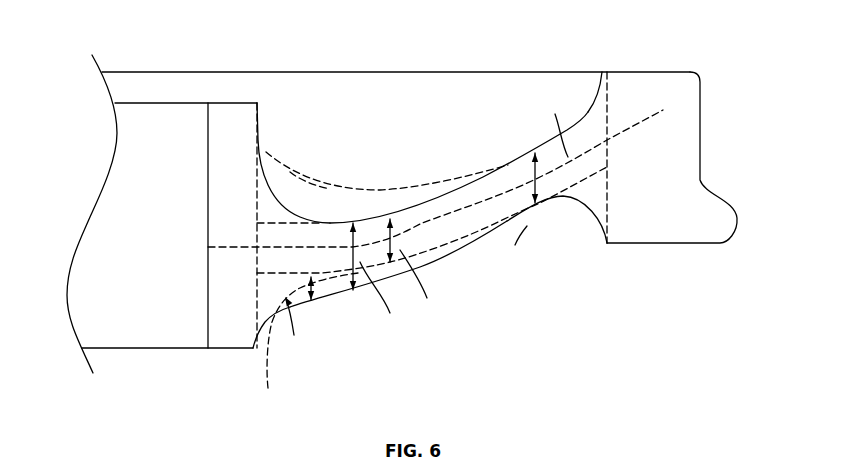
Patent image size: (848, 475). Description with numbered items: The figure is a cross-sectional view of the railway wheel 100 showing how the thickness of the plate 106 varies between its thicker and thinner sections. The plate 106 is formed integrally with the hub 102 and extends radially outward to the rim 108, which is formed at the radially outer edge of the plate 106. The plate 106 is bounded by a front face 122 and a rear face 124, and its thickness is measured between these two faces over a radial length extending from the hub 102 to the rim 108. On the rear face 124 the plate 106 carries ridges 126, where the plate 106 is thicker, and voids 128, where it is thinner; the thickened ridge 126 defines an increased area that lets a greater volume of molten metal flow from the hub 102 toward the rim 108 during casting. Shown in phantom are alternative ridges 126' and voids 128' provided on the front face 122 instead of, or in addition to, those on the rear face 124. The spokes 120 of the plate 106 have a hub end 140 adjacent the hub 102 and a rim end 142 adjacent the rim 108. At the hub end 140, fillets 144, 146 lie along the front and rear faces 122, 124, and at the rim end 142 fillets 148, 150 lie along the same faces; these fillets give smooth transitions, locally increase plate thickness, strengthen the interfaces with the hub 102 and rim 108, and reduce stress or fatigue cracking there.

The railway wheel 100 is at (137, 40).
The hub 102 is at (218, 337).
The plate 106 is at (440, 197).
The rim 108 is at (650, 228).
The spokes 120 is at (483, 183).
The front face 122 is at (497, 92).
The rear face 124 is at (513, 293).
The ridge 126 is at (403, 318).
The ridge 126' is at (387, 139).
The void 128 is at (432, 270).
The void 128' is at (435, 178).
The hub end 140 is at (313, 170).
The rim end 142 is at (621, 65).
The fillet 144 is at (277, 206).
The fillet 146 is at (253, 348).
The fillet 148 is at (602, 72).
The fillet 150 is at (594, 203).